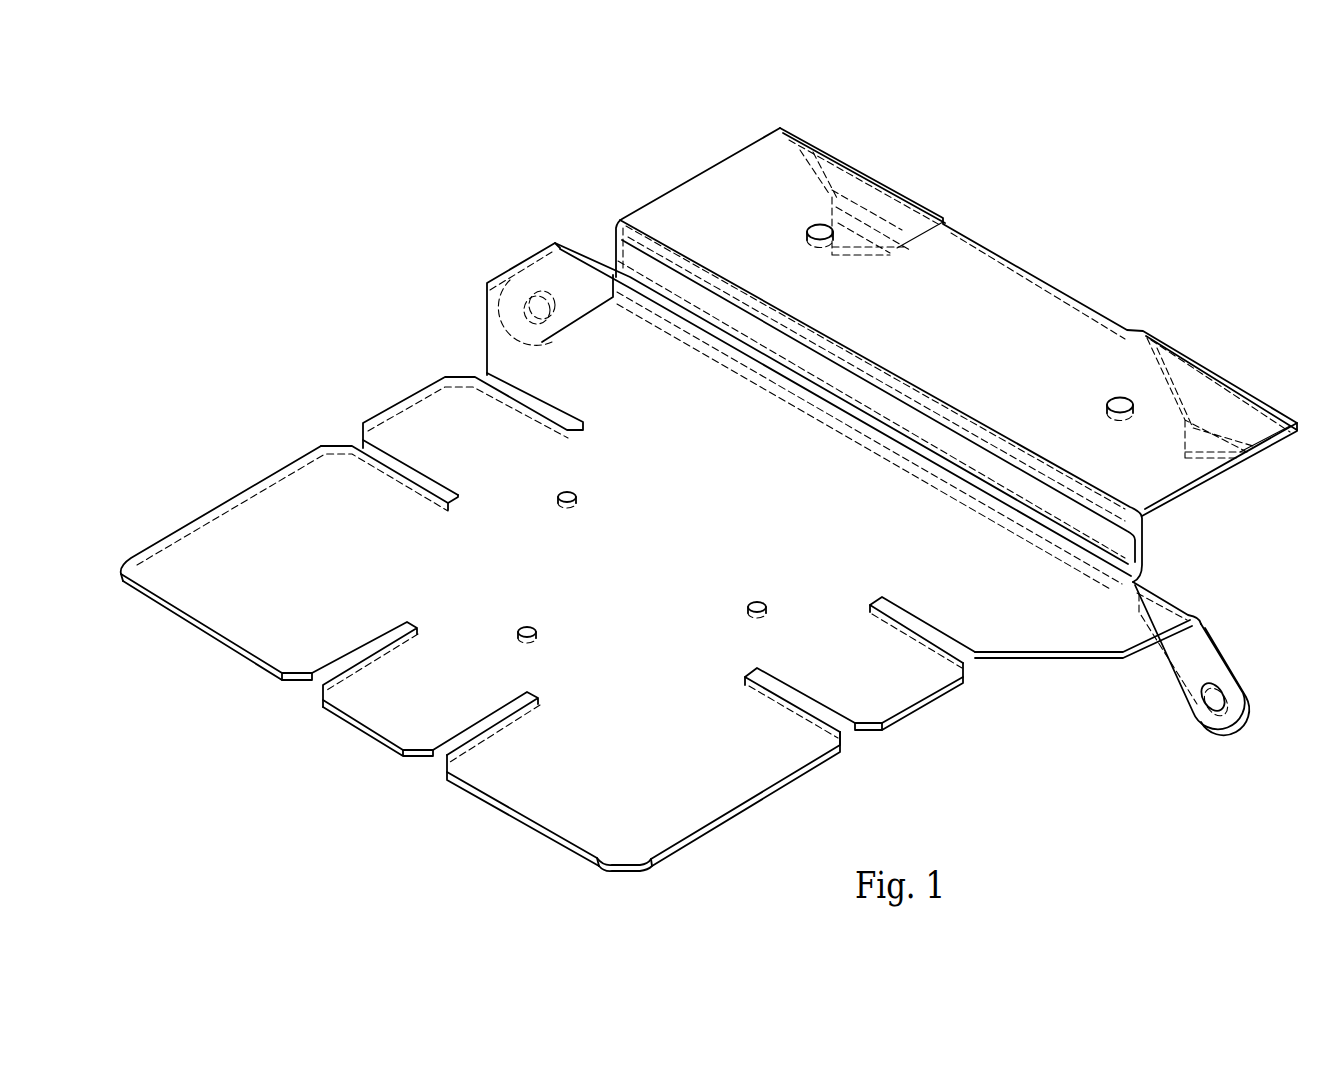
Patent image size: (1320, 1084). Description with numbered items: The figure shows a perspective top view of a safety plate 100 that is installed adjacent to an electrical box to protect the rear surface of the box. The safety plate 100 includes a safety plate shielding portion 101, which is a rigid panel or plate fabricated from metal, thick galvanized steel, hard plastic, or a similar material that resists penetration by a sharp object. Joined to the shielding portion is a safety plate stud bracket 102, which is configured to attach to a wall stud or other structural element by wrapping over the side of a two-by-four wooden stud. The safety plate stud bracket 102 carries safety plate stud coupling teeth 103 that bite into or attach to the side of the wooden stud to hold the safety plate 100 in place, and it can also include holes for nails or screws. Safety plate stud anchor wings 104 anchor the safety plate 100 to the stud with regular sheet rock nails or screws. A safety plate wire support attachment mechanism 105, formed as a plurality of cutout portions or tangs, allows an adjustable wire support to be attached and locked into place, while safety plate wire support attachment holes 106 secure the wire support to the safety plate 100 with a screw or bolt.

The safety plate 100 is at (396, 128).
The safety plate shielding portion 101 is at (280, 530).
The safety plate stud bracket 102 is at (718, 202).
The safety plate stud coupling teeth 103 is at (1183, 450).
The safety plate stud anchor wings 104 is at (1211, 708).
The safety plate wire support attachment mechanism 105 is at (400, 398).
The safety plate wire support attachment holes 106 is at (563, 503).